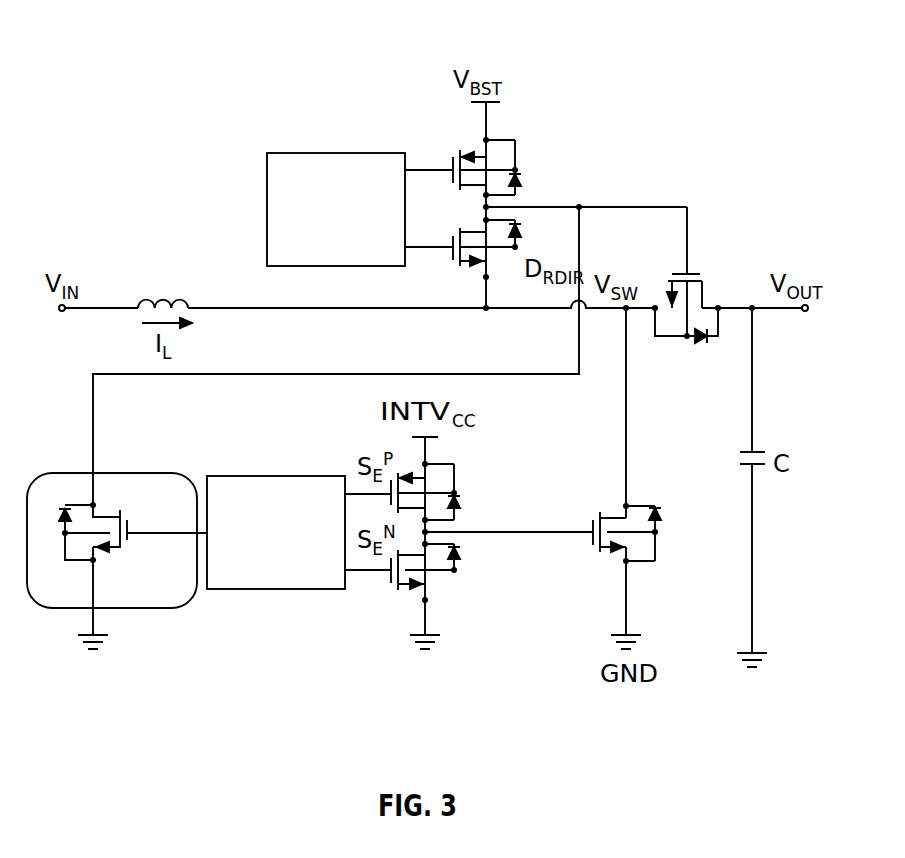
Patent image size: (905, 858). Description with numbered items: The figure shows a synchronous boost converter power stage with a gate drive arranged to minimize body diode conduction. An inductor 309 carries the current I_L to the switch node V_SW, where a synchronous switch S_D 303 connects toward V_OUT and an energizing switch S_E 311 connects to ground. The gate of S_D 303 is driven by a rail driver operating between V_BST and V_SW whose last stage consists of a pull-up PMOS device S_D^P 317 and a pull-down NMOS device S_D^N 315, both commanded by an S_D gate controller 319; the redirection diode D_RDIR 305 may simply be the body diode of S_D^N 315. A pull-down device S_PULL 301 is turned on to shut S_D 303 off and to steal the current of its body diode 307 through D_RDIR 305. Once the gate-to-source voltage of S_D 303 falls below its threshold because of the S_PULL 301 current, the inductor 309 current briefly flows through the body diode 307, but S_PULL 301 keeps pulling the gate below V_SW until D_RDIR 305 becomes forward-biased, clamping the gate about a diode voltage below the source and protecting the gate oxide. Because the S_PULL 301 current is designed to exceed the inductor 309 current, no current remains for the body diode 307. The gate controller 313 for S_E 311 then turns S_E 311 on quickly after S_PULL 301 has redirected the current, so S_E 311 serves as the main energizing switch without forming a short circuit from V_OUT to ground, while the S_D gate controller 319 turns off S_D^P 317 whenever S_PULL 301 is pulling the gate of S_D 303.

The pull-down device S_PULL 301 is at (106, 517).
The S_D 303 is at (683, 273).
The redirection diode D_RDIR 305 is at (520, 220).
The body diode 307 is at (700, 342).
The inductor 309 is at (163, 298).
The energizing switch S_E 311 is at (613, 515).
The gate controller 313 is at (230, 476).
The pull-down NMOS device S_D^N 315 is at (425, 193).
The pull-up PMOS device S_D^P 317 is at (423, 117).
The S_D gate controller 319 is at (302, 153).